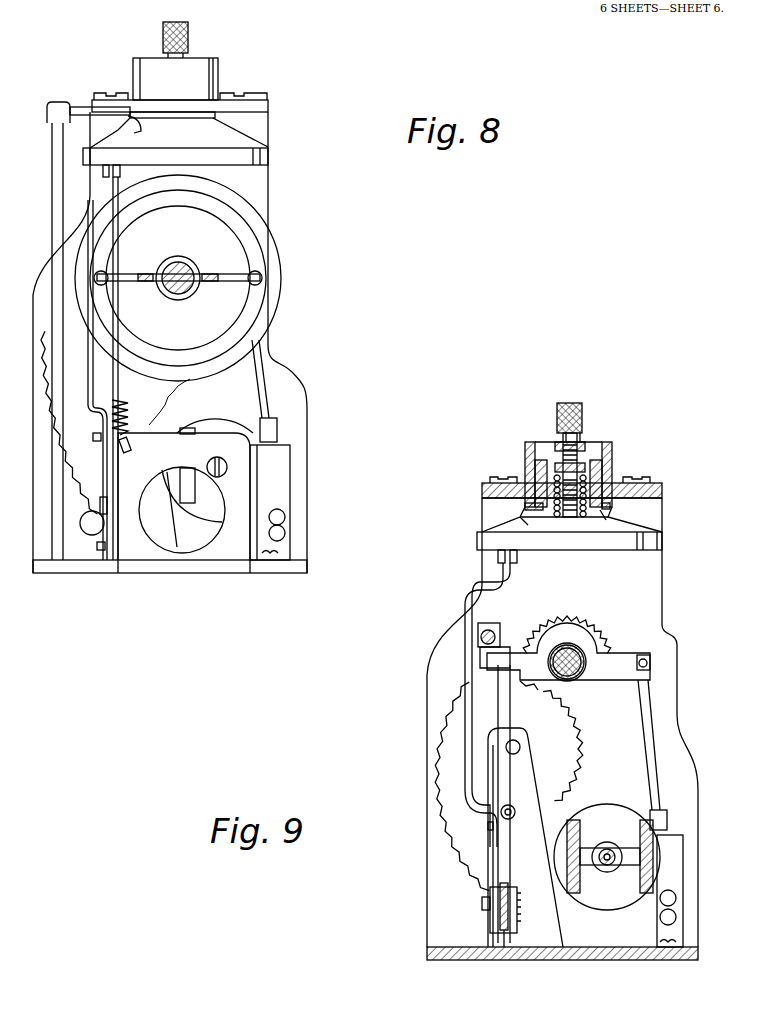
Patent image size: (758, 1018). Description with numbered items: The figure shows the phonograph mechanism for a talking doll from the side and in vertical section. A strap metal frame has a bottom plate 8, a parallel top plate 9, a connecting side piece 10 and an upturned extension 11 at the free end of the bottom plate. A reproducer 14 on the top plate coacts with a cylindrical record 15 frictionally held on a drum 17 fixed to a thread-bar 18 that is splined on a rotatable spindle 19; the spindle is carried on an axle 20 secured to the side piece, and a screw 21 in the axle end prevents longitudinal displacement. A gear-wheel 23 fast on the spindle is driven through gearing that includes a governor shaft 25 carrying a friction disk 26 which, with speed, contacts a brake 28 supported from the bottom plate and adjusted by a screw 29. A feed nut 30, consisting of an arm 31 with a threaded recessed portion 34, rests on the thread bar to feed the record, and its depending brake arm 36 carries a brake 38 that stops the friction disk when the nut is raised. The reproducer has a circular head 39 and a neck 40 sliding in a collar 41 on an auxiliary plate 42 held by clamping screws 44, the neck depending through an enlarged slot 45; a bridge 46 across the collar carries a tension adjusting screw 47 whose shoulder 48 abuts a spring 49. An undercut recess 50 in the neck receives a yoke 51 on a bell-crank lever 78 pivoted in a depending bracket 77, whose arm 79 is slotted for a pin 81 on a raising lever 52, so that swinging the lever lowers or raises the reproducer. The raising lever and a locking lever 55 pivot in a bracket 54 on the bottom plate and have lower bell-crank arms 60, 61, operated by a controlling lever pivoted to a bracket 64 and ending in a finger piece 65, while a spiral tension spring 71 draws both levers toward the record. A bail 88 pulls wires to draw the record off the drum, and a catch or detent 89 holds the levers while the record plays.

In FIG. 9, the bottom plate 8 is at (680, 962).
In FIG. 9, the top plate 9 is at (662, 497).
In FIG. 9, the side piece 10 is at (685, 770).
In FIG. 8, the extension 11 is at (227, 540).
In FIG. 8, the reproducer 14 is at (223, 142).
In FIG. 9, the reproducer 14 is at (477, 540).
In FIG. 8, the cylindrical record 15 is at (268, 293).
In FIG. 8, the drum 17 is at (240, 242).
In FIG. 9, the thread-bar 18 is at (580, 650).
In FIG. 9, the spindle 19 is at (575, 678).
In FIG. 9, the axle 20 is at (585, 658).
In FIG. 8, the screw 21 is at (172, 263).
In FIG. 9, the gear-wheel 23 is at (550, 630).
In FIG. 9, the governor shaft 25 is at (607, 863).
In FIG. 8, the friction disk 26 is at (218, 415).
In FIG. 9, the friction disk 26 is at (623, 900).
In FIG. 8, the brake 28 is at (255, 458).
In FIG. 9, the brake 28 is at (670, 891).
In FIG. 8, the screw 29 is at (278, 515).
In FIG. 9, the screw 29 is at (673, 898).
In FIG. 9, the feed nut 30 is at (547, 642).
In FIG. 9, the arm 31 is at (626, 667).
In FIG. 9, the hollowed or recessed portion 34 is at (568, 650).
In FIG. 8, the brake arm 36 is at (267, 383).
In FIG. 9, the brake arm 36 is at (657, 743).
In FIG. 8, the brake 38 is at (273, 427).
In FIG. 9, the brake 38 is at (667, 820).
In FIG. 9, the circular head 39 is at (623, 540).
In FIG. 9, the neck 40 is at (543, 467).
In FIG. 8, the collar 41 is at (175, 79).
In FIG. 9, the collar 41 is at (527, 452).
In FIG. 8, the auxiliary plate 42 is at (247, 103).
In FIG. 9, the auxiliary plate 42 is at (663, 487).
In FIG. 8, the clamping screws 44 is at (103, 92).
In FIG. 9, the clamping screws 44 is at (495, 478).
In FIG. 8, the enlarged slot 45 is at (130, 110).
In FIG. 9, the enlarged slot 45 is at (525, 503).
In FIG. 9, the bridge or plate 46 is at (583, 448).
In FIG. 8, the tension adjusting screw 47 is at (167, 32).
In FIG. 9, the tension adjusting screw 47 is at (580, 407).
In FIG. 9, the annular lateral flange or shoulder 48 is at (608, 450).
In FIG. 9, the spring 49 is at (582, 493).
In FIG. 9, the undercut recess 50 is at (605, 505).
In FIG. 9, the yoke 51 is at (600, 510).
In FIG. 9, the raising lever 52 is at (503, 712).
In FIG. 9, the bracket 54 is at (503, 960).
In FIG. 9, the locking lever 55 is at (527, 723).
In FIG. 9, the bell-crank arm 60 is at (498, 913).
In FIG. 9, the bell-crank arm 61 is at (517, 920).
In FIG. 8, the bracket 64 is at (102, 553).
In FIG. 8, the finger piece 65 is at (88, 525).
In FIG. 8, the spiral tension spring 71 is at (123, 423).
In FIG. 9, the spiral tension spring 71 is at (513, 813).
In FIG. 8, the depending bracket 77 is at (130, 125).
In FIG. 9, the depending bracket 77 is at (520, 517).
In FIG. 8, the bell-crank lever 78 is at (90, 190).
In FIG. 9, the bell-crank lever 78 is at (493, 590).
In FIG. 8, the arm 79 is at (69, 422).
In FIG. 9, the arm 79 is at (467, 700).
In FIG. 8, the pin 81 is at (98, 435).
In FIG. 9, the pin 81 is at (490, 825).
In FIG. 8, the bail 88 is at (212, 280).
In FIG. 9, the catch or detent 89 is at (490, 632).